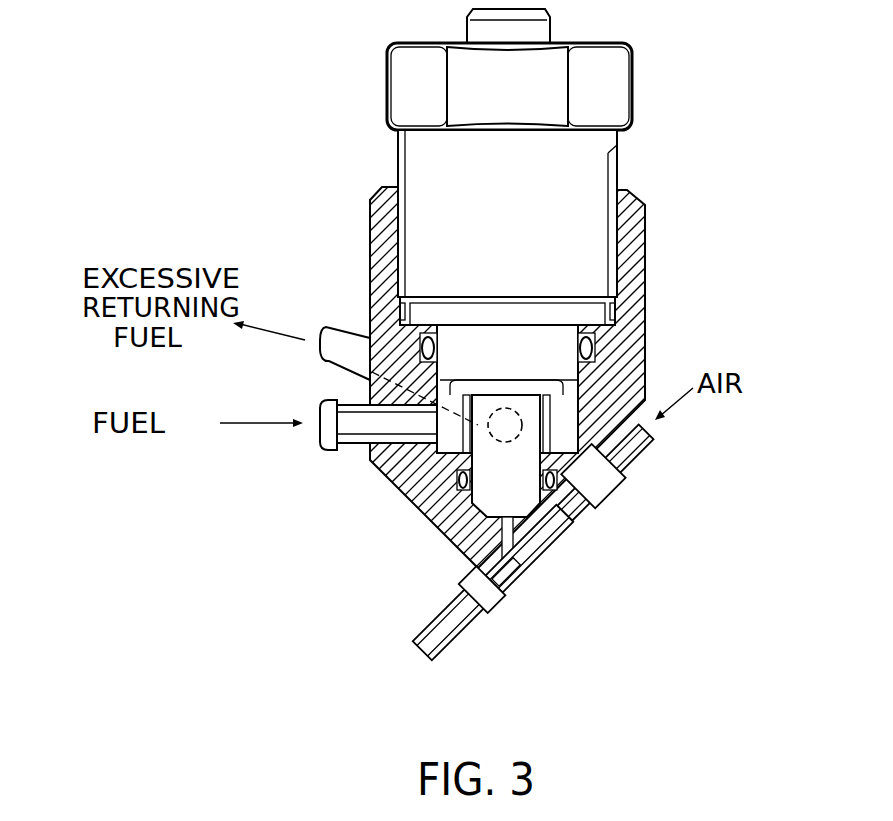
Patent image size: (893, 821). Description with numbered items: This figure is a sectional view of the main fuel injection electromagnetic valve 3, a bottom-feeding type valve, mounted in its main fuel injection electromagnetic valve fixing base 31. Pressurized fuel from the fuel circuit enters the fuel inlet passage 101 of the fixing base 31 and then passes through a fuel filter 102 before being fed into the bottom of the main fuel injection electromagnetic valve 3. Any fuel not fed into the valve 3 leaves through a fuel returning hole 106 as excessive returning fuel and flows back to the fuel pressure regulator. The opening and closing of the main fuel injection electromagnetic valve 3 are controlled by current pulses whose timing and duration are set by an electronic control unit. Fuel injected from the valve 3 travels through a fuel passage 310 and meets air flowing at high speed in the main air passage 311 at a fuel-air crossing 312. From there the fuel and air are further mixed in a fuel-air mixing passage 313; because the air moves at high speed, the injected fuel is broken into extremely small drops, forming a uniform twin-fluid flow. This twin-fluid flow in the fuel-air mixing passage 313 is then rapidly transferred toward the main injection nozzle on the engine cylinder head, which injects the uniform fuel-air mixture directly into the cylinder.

The main fuel injection electromagnetic valve 3 is at (417, 160).
The main fuel injection electromagnetic valve fixing base 31 is at (635, 325).
The fuel inlet passage 101 is at (320, 437).
The fuel filter 102 is at (457, 457).
The fuel returning hole 106 is at (520, 420).
The fuel passage 310 is at (490, 565).
The main air passage 311 is at (563, 512).
The fuel-air crossing 312 is at (525, 583).
The fuel-air mixing passage 313 is at (448, 642).